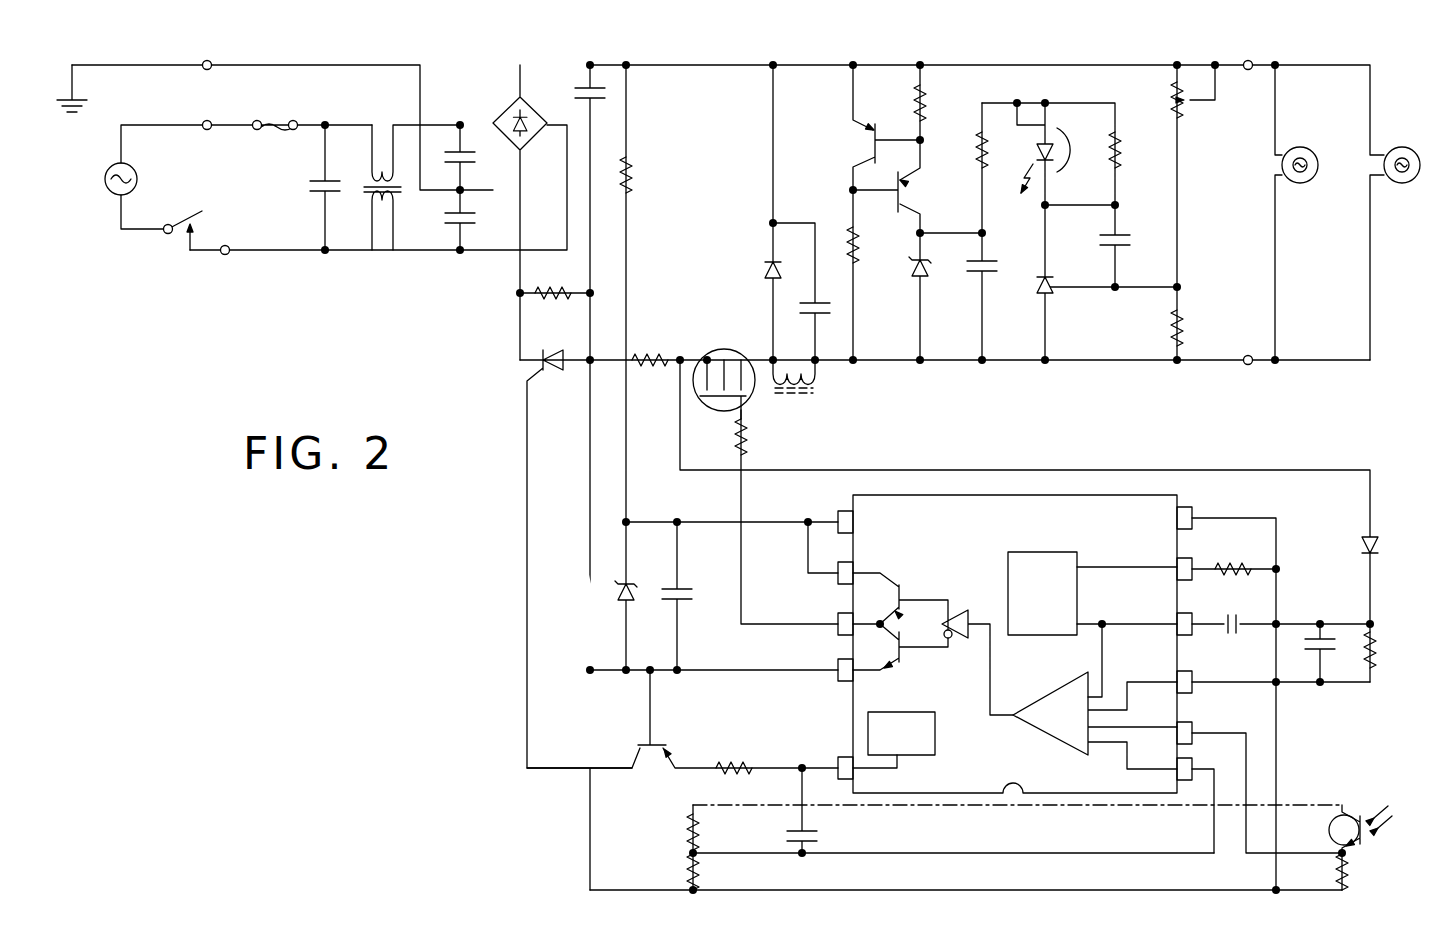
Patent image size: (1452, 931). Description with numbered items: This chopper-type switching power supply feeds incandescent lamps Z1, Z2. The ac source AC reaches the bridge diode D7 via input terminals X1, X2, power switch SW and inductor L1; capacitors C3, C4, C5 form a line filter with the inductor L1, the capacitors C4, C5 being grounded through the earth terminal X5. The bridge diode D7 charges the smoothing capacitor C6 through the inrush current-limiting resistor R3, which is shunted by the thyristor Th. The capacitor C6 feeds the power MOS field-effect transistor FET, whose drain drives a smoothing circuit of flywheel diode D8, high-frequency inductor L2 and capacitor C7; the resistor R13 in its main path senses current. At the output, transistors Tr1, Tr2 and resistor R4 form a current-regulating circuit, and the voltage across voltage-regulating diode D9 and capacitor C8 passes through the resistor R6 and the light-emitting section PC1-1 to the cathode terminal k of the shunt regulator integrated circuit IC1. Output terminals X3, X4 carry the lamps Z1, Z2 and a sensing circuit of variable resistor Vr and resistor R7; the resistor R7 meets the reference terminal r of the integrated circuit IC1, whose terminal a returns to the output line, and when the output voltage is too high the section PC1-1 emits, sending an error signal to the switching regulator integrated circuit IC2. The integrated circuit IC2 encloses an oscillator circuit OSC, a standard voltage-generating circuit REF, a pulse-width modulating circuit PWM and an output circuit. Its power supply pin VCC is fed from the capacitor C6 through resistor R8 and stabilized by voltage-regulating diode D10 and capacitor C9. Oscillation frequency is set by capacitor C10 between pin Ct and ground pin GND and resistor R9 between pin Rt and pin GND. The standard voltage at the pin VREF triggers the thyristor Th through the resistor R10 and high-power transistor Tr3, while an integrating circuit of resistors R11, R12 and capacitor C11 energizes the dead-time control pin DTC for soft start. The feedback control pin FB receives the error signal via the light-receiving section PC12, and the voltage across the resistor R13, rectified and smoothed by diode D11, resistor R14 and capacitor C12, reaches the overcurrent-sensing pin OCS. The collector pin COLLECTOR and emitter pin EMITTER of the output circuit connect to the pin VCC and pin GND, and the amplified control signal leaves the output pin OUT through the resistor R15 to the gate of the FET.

The earth terminal X5 is at (266, 108).
The input terminal X1 is at (246, 127).
The input terminal X2 is at (325, 268).
The ac source AC is at (116, 188).
The power switch SW is at (183, 219).
The capacitor C3 is at (305, 187).
The inductor L1 is at (412, 208).
The capacitor C4 is at (475, 157).
The capacitor C5 is at (506, 189).
The bridge diode D7 is at (520, 212).
The smoothing capacitor C6 is at (595, 94).
The resistor R8 is at (642, 293).
The inrush current-limiting resistor R3 is at (557, 281).
The thyristor Th is at (576, 545).
The resistor R13 is at (657, 346).
The power MOS field-effect transistor FET is at (724, 371).
The resistor R15 is at (786, 517).
The flywheel diode D8 is at (750, 212).
The capacitor C7 is at (801, 293).
The high-frequency inductor L2 is at (794, 389).
The transistor Tr1 is at (863, 212).
The transistor Tr2 is at (901, 188).
The resistor R4 is at (901, 102).
The resistor R6 is at (964, 233).
The voltage-regulating diode D9 is at (945, 298).
The capacitor C8 is at (990, 286).
The light-emitting section of photocoupler PC1-1 is at (1056, 181).
The shunt regulator integrated circuit IC1 is at (1109, 284).
The cathode terminal k is at (1048, 264).
The reference terminal r is at (1061, 287).
The anode terminal a is at (1044, 302).
The variable resistor Vr is at (1195, 174).
The resistor R7 is at (1193, 325).
The output terminal X3 is at (1254, 49).
The output terminal X4 is at (1254, 380).
The incandescent lamp Z1 is at (1300, 150).
The incandescent lamp Z2 is at (1402, 152).
The voltage-regulating diode D10 is at (639, 598).
The capacitor C9 is at (732, 596).
The high-power transistor Tr3 is at (682, 735).
The resistor R10 is at (761, 756).
The capacitor C11 is at (820, 812).
The resistor R11 is at (926, 831).
The resistor R12 is at (668, 873).
The emitter pin EMITTER is at (833, 668).
The output pin OUT is at (831, 620).
The collector pin COLLECTOR is at (852, 570).
The power supply pin VCC is at (837, 518).
The standard voltage pin VREF is at (837, 763).
The switching regulator integrated circuit IC2 is at (1015, 644).
The oscillator circuit OSC is at (1092, 624).
The pulse-width modulating circuit PWM is at (1095, 720).
The standard voltage-generating circuit REF is at (894, 740).
The ground pin GND is at (1192, 512).
The pin RT Rt is at (1192, 562).
The external resistor R9 is at (1236, 557).
The pin CT Ct is at (1192, 617).
The external capacitor C10 is at (1283, 617).
The overcurrent-sensing pin OCS is at (1192, 675).
The feedback control pin FB is at (1192, 726).
The dead-time control pin DTC is at (1192, 763).
The diode D11 is at (1393, 579).
The capacitor C12 is at (1331, 652).
The resistor R14 is at (1390, 653).
The light-receiving section of photocoupler PC12 is at (1372, 847).